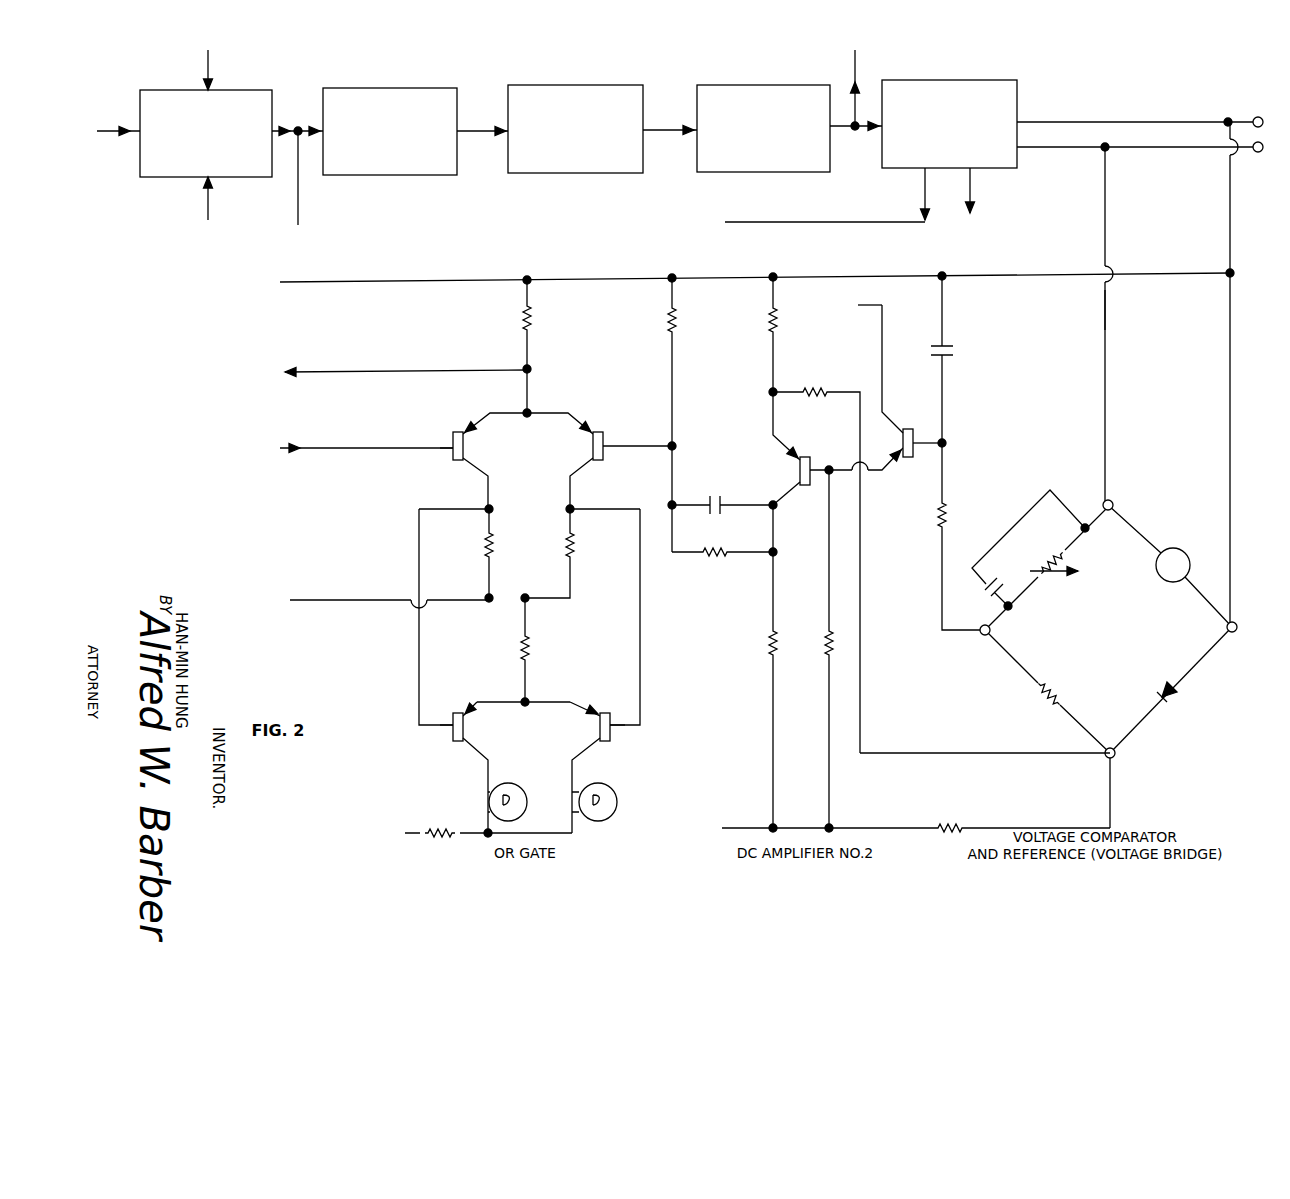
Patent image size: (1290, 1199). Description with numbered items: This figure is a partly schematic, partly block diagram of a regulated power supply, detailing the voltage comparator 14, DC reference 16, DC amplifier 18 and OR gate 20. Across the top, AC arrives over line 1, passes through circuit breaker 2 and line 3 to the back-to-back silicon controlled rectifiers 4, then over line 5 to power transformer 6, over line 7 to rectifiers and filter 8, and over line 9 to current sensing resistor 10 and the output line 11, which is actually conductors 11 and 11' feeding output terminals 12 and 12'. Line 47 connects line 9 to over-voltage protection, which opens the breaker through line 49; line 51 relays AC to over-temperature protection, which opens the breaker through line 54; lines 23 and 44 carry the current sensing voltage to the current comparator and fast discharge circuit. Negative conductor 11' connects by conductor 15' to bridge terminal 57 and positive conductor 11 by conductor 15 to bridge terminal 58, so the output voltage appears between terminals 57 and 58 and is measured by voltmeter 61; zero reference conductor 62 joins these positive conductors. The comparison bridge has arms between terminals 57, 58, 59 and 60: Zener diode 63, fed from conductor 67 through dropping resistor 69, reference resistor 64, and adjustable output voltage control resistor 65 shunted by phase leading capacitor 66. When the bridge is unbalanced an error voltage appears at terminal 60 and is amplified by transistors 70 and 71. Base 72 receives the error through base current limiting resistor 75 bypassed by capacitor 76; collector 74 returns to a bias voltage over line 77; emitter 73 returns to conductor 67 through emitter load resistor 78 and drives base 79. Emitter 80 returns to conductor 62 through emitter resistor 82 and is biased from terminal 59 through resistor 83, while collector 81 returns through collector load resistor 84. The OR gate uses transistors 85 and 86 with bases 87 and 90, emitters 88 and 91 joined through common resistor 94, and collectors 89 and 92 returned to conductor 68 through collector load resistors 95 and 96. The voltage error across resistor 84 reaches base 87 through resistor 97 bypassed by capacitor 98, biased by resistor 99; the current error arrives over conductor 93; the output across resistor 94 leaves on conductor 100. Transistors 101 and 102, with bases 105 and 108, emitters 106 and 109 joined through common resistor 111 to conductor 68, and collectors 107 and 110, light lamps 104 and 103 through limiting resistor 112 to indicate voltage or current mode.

The line 1 is at (108, 129).
The circuit breaker 2 is at (207, 111).
The line 3 is at (296, 127).
The back-to-back silicon controlled rectifiers 4 is at (376, 88).
The line 5 is at (486, 128).
The power transformer 6 is at (556, 85).
The line 7 is at (662, 127).
The rectifiers and filter 8 is at (741, 85).
The line 9 is at (865, 135).
The current sensing resistor 10 is at (921, 80).
The output line 11 is at (1137, 108).
The negative conductor 11' is at (1137, 161).
The output terminal 12 is at (1242, 106).
The output terminal 12' is at (1249, 168).
The comparator 14 is at (1030, 293).
The DC reference 16 is at (1049, 297).
The DC amplifier 18 is at (1069, 302).
The OR gate 20 is at (1088, 307).
The conductor 15 is at (1214, 374).
The conductor 15' is at (1123, 326).
The line 23 is at (975, 188).
The line 44 is at (850, 224).
The line 47 is at (857, 76).
The line 49 is at (210, 76).
The line 51 is at (299, 195).
The line 54 is at (209, 205).
The bridge terminal 57 is at (1114, 505).
The bridge terminal 58 is at (1237, 632).
The bridge terminal 59 is at (1115, 757).
The bridge terminal 60 is at (980, 627).
The voltmeter 61 is at (1182, 546).
The zero reference conductor 62 is at (625, 276).
The Zener diode 63 is at (1178, 694).
The reference resistor 64 is at (1060, 688).
The adjustable output voltage control resistor 65 is at (1052, 560).
The phase leading capacitor 66 is at (1012, 530).
The conductor 67 is at (884, 827).
The conductor 68 is at (356, 598).
The dropping resistor 69 is at (956, 827).
The transistor 70 is at (912, 456).
The transistor 71 is at (812, 457).
The base 72 is at (915, 438).
The emitter 73 is at (893, 467).
The collector 74 is at (905, 430).
The base current limiting resistor 75 is at (946, 508).
The capacitor 76 is at (948, 350).
The line 77 is at (884, 345).
The emitter load resistor 78 is at (824, 645).
The base 79 is at (817, 470).
The emitter 80 is at (792, 450).
The collector 81 is at (794, 482).
The emitter resistor 82 is at (778, 322).
The resistor 83 is at (813, 391).
The collector load resistor 84 is at (768, 645).
The transistor 85 is at (605, 440).
The transistor 86 is at (453, 438).
The base 87 is at (606, 453).
The emitter 88 is at (585, 423).
The collector 89 is at (578, 465).
The base 90 is at (452, 453).
The emitter 91 is at (478, 425).
The collector 92 is at (478, 466).
The conductor 93 is at (360, 447).
The common resistor 94 is at (534, 318).
The collector load resistor 95 is at (575, 548).
The collector load resistor 96 is at (485, 548).
The resistor 97 is at (708, 552).
The capacitor 98 is at (722, 502).
The resistor 99 is at (678, 322).
The conductor 100 is at (365, 370).
The transistor 101 is at (608, 713).
The transistor 102 is at (458, 713).
The lamp 103 is at (520, 786).
The lamp 104 is at (612, 786).
The base 105 is at (610, 733).
The emitter 106 is at (590, 718).
The collector 107 is at (588, 741).
The base 108 is at (453, 733).
The emitter 109 is at (476, 717).
The collector 110 is at (474, 741).
The common resistor 111 is at (533, 660).
The limiting resistor 112 is at (452, 828).